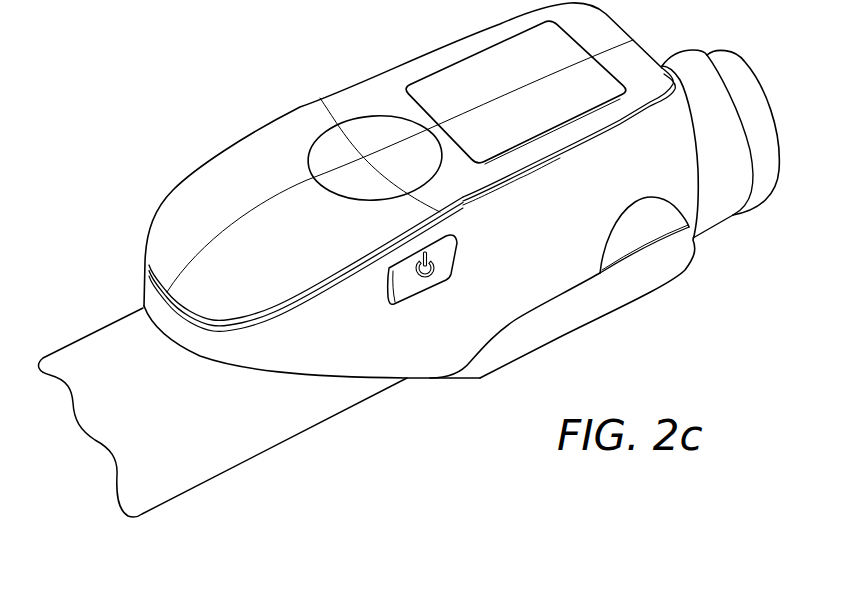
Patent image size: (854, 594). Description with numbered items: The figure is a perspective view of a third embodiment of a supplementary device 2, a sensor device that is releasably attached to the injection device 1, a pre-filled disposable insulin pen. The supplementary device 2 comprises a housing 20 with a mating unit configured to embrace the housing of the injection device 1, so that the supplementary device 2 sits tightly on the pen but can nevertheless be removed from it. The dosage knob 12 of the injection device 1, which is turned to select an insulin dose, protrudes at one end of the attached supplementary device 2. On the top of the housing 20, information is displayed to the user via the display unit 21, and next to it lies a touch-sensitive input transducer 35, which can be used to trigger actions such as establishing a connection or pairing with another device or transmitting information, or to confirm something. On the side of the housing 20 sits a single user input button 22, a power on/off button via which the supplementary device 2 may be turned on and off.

The injection device 1 is at (91, 321).
The supplementary device 2 is at (282, 99).
The dosage knob 12 is at (723, 53).
The housing 20 is at (682, 167).
The display unit 21 is at (437, 80).
The button 22 is at (433, 283).
The touch-sensitive input transducer 35 is at (361, 124).